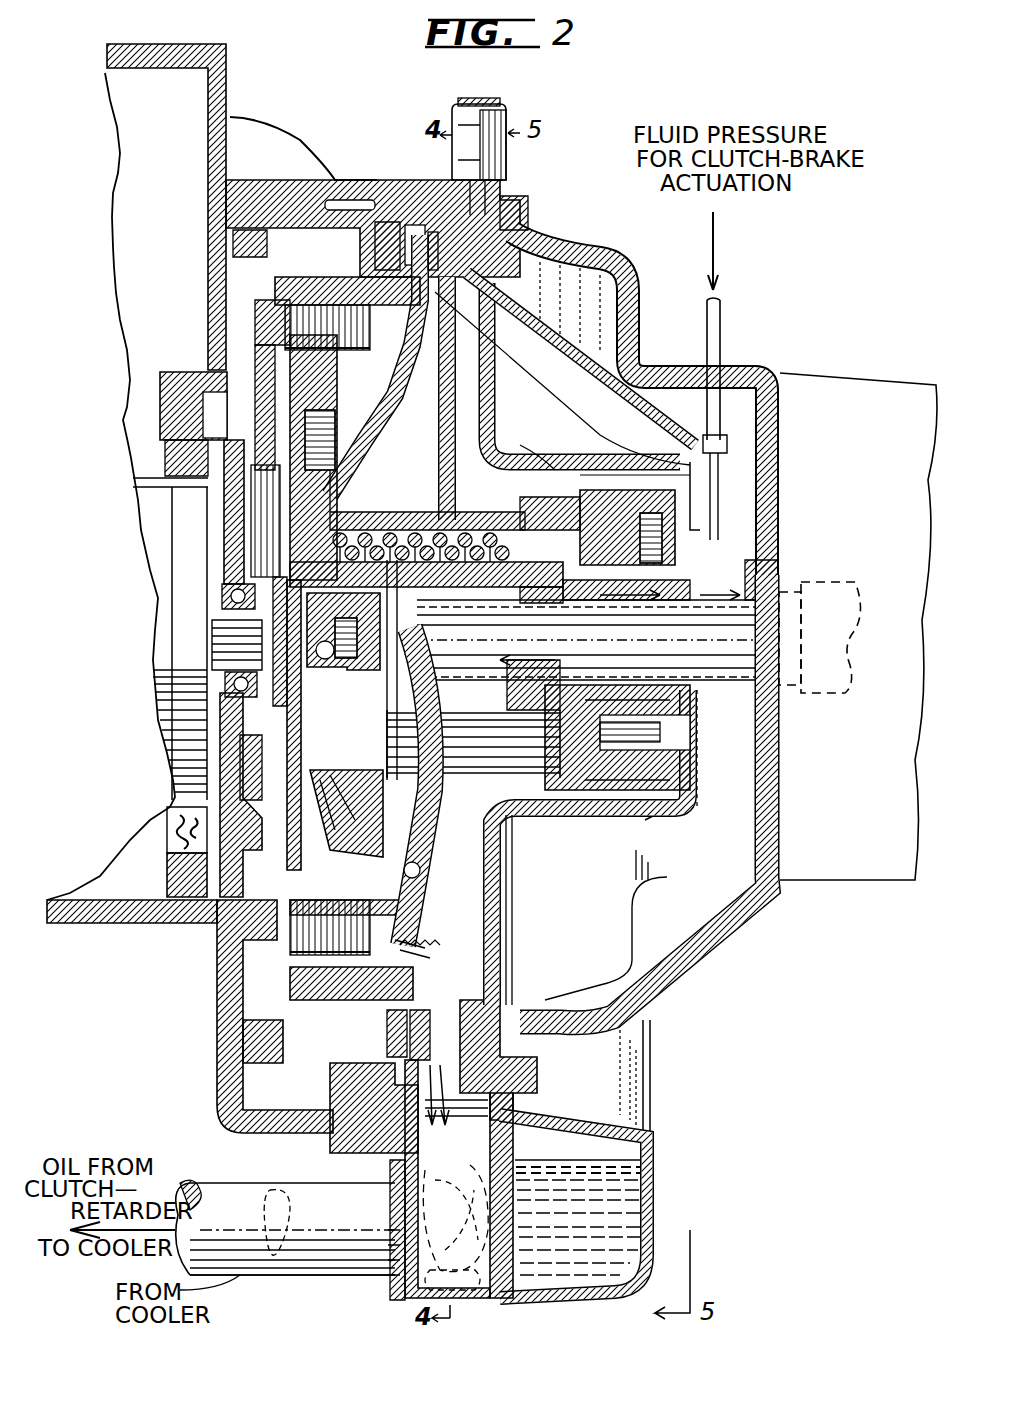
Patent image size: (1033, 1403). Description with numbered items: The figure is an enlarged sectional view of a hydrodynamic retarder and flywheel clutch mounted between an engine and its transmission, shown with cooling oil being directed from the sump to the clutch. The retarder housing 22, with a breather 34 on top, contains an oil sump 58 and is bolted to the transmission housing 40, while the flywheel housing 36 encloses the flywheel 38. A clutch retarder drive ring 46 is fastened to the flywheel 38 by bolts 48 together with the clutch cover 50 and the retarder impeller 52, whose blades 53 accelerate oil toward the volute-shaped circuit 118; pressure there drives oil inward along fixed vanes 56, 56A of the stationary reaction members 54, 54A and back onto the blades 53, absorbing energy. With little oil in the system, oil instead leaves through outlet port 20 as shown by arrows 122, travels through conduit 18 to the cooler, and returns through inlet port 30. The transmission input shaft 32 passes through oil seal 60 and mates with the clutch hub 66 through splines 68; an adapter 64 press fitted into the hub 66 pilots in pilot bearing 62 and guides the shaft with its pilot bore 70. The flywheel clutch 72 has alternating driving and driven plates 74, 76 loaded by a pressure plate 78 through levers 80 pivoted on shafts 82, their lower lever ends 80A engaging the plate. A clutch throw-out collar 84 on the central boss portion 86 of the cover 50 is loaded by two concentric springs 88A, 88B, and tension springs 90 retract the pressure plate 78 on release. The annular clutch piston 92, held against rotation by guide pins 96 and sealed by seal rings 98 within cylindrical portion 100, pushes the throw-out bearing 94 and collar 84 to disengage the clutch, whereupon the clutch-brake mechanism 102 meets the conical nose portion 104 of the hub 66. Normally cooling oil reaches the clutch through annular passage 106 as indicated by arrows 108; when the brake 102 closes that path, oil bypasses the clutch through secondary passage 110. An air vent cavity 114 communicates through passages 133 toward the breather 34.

The conduit 18 is at (290, 1285).
The port 20 is at (388, 1272).
The retarder housing 22 is at (650, 1080).
The inlet port 30 is at (272, 1190).
The transmission input shaft 32 is at (757, 647).
The breather 34 is at (506, 115).
The flywheel housing 36 is at (222, 1010).
The flywheel 38 is at (272, 1060).
The transmission housing 40 is at (695, 950).
The clutch retarder drive ring 46 is at (340, 277).
The bolts 48 is at (302, 277).
The clutch cover 50 is at (395, 820).
The retarder impeller 52 is at (433, 235).
The blades 53 is at (420, 235).
The stationary reaction member 54 is at (387, 1025).
The stationary reaction member 54A is at (528, 222).
The fixed vanes 56 is at (380, 225).
The fixed vanes 56A is at (470, 300).
The oil sump 58 is at (645, 1200).
The oil seal 60 is at (760, 585).
The pilot bearing 62 is at (222, 596).
The adapter 64 is at (235, 641).
The clutch hub 66 is at (300, 585).
The splines 68 is at (610, 600).
The pilot bore 70 is at (325, 650).
The flywheel clutch 72 is at (268, 318).
The driving plates 74 is at (290, 930).
The driven plates 76 is at (290, 975).
The pressure plate 78 is at (362, 335).
The levers 80 is at (473, 670).
The lower lever ends 80A is at (505, 892).
The shafts 82 is at (420, 860).
The clutch throw-out collar 84 is at (485, 528).
The central boss portion 86 is at (378, 512).
The concentric spring 88A is at (400, 530).
The concentric spring 88B is at (410, 545).
The tension springs 90 is at (428, 940).
The annular clutch piston 92 is at (615, 790).
The throw-out bearing 94 is at (585, 490).
The guide pins 96 is at (670, 790).
The seal rings 98 is at (625, 478).
The cylindrical portion 100 is at (665, 478).
The clutch-brake mechanism 102 is at (548, 600).
The conical nose portion 104 is at (555, 660).
The annular passage 106 is at (643, 600).
The arrows 108 is at (685, 600).
The secondary passage 110 is at (480, 450).
The air vent cavity 114 is at (582, 385).
The circuit 118 is at (430, 225).
The arrows 122 is at (452, 1179).
The passages 133 is at (510, 462).